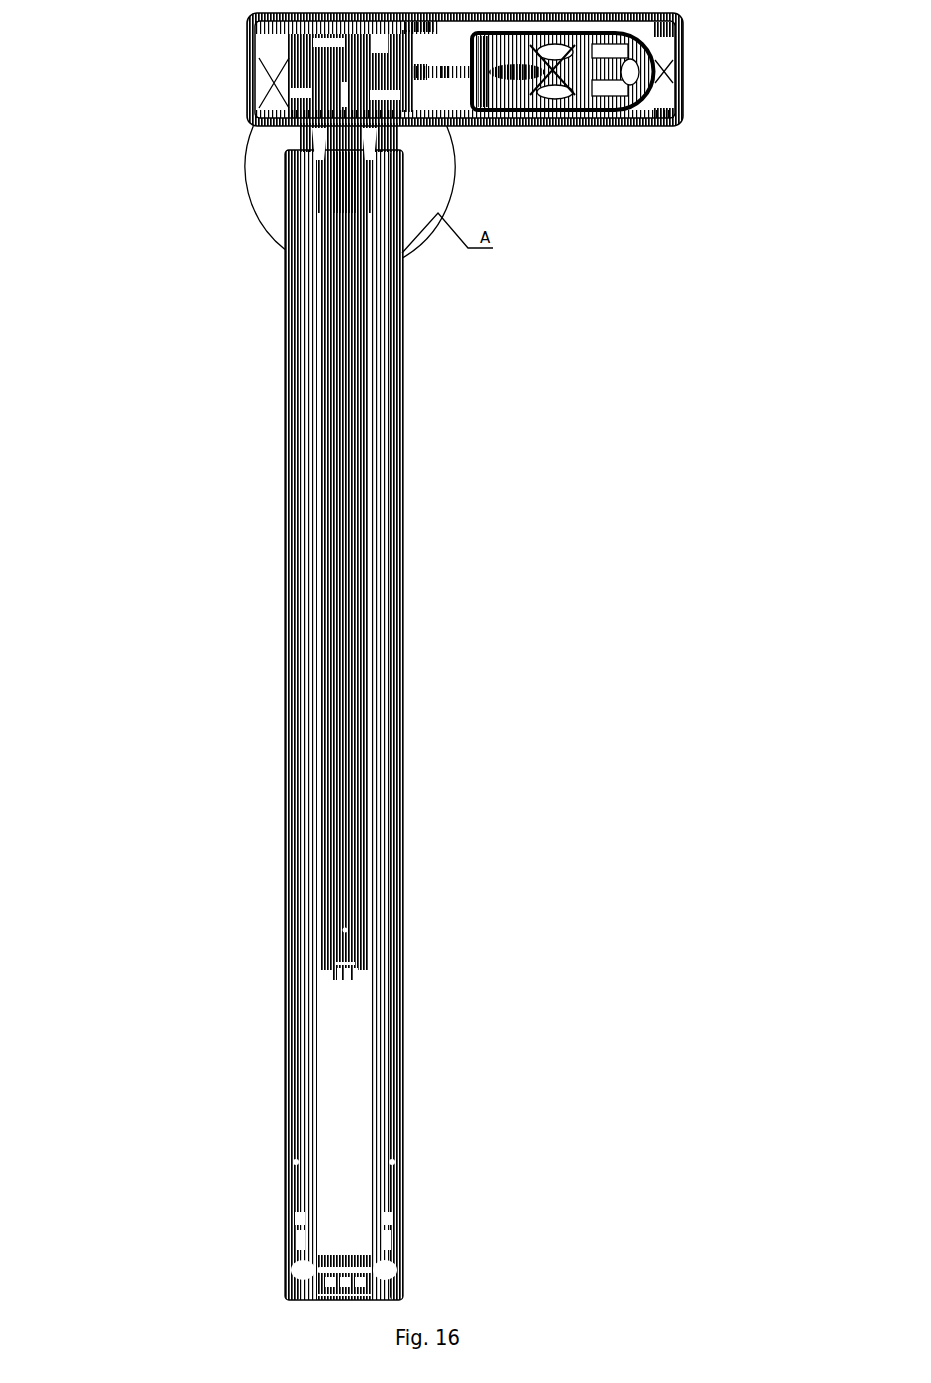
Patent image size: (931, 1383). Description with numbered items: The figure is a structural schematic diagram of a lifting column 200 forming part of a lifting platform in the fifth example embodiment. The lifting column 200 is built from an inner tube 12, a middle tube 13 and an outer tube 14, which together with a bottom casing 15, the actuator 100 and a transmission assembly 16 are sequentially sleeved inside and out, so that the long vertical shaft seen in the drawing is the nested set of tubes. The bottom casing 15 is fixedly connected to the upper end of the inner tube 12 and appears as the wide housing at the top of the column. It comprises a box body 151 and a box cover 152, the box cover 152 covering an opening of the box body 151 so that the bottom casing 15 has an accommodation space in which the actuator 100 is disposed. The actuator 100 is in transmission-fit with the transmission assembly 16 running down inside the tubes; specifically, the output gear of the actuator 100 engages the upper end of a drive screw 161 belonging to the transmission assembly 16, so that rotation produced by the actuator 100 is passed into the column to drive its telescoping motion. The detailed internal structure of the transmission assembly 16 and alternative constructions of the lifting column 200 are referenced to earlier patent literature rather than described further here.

The inner tube 12 is at (402, 226).
The middle tube 13 is at (402, 309).
The outer tube 14 is at (402, 356).
The bottom casing 15 is at (250, 103).
The transmission assembly 16 is at (293, 465).
The actuator 100 is at (537, 125).
The box body 151 is at (590, 125).
The box cover 152 is at (683, 93).
The drive screw 161 is at (287, 178).
The lifting column 200 is at (293, 587).